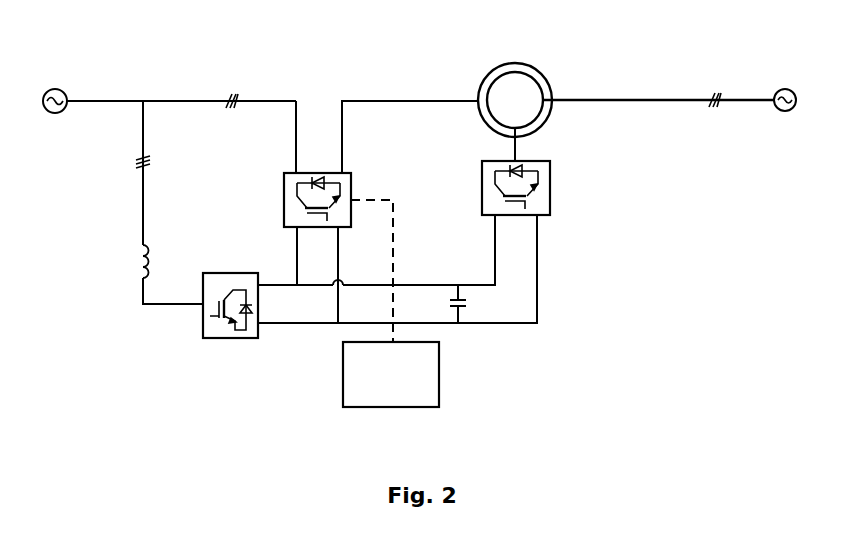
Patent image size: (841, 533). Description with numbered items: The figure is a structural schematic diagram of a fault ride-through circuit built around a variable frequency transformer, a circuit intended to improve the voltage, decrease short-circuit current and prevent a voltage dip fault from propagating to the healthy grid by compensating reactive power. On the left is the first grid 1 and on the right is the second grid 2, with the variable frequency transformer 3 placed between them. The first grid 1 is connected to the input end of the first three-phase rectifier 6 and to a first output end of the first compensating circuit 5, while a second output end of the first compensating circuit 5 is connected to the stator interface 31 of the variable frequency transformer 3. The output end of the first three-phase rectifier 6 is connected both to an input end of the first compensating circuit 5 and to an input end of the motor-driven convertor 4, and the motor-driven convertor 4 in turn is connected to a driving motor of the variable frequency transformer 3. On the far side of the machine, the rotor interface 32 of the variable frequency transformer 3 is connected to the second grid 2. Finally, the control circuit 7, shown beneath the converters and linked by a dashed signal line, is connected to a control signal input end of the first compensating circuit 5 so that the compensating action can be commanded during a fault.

The first grid 1 is at (55, 89).
The second grid 2 is at (786, 88).
The variable frequency transformer 3 is at (517, 78).
The stator interface 31 is at (478, 92).
The rotor interface 32 is at (553, 90).
The motor-driven convertor 4 is at (550, 199).
The first compensating circuit 5 is at (351, 176).
The first three-phase rectifier 6 is at (238, 272).
The control circuit 7 is at (440, 380).